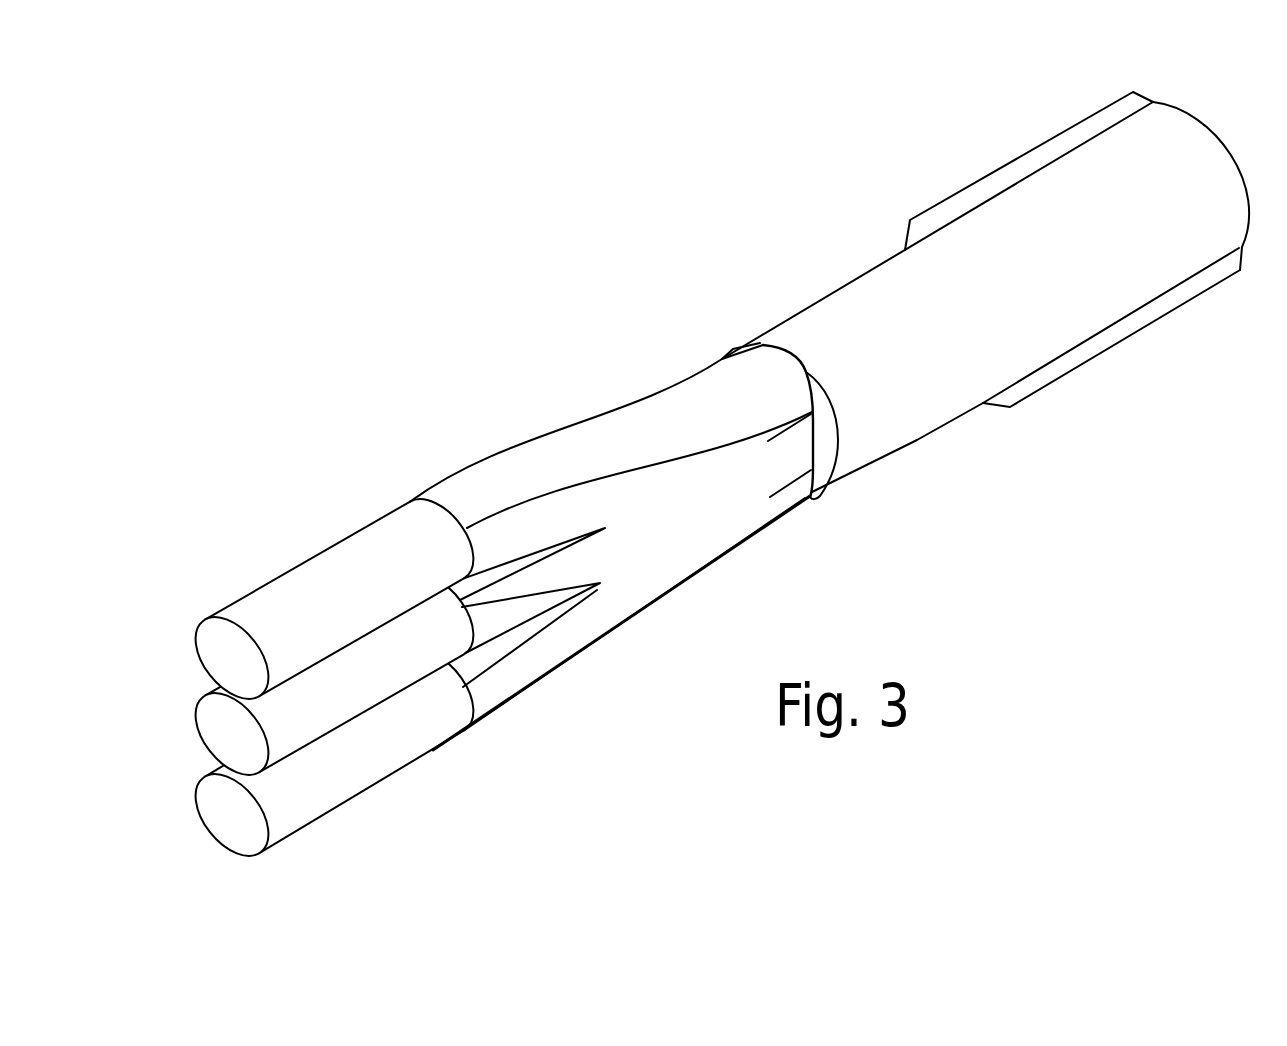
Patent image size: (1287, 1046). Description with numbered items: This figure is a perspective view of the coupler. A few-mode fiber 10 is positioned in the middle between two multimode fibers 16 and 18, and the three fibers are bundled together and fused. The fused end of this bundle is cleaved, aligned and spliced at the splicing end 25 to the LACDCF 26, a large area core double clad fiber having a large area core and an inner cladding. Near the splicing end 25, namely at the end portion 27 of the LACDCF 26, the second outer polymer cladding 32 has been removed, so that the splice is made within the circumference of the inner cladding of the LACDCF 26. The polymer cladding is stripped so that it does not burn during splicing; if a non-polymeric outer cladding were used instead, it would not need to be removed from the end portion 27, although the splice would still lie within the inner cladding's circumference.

The few-mode fiber 10 is at (673, 492).
The multimode fiber 16 is at (315, 532).
The multimode fiber 18 is at (384, 809).
The splicing end 25 is at (823, 465).
The LACDCF 26 is at (993, 148).
The end portion 27 is at (815, 303).
The second outer polymer cladding 32 is at (1130, 323).